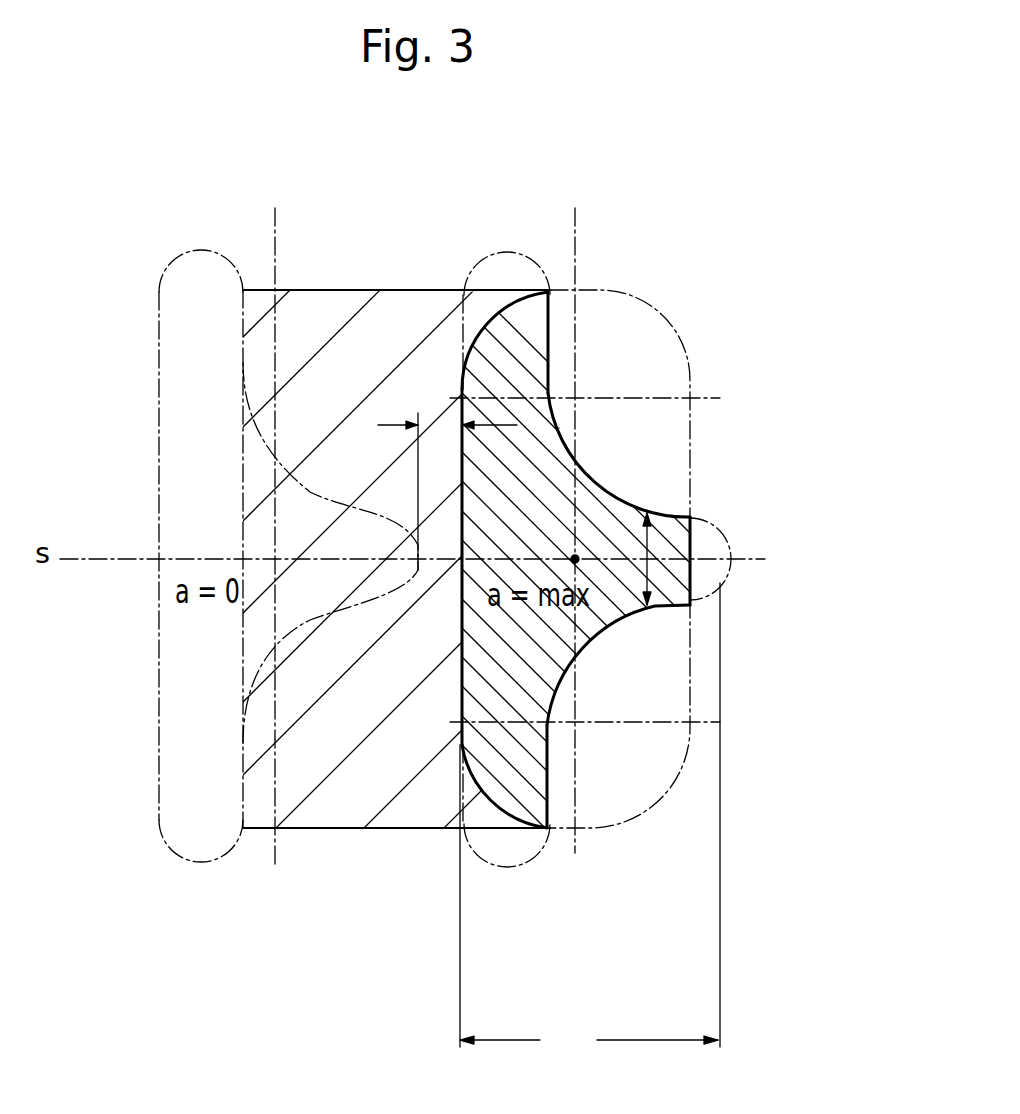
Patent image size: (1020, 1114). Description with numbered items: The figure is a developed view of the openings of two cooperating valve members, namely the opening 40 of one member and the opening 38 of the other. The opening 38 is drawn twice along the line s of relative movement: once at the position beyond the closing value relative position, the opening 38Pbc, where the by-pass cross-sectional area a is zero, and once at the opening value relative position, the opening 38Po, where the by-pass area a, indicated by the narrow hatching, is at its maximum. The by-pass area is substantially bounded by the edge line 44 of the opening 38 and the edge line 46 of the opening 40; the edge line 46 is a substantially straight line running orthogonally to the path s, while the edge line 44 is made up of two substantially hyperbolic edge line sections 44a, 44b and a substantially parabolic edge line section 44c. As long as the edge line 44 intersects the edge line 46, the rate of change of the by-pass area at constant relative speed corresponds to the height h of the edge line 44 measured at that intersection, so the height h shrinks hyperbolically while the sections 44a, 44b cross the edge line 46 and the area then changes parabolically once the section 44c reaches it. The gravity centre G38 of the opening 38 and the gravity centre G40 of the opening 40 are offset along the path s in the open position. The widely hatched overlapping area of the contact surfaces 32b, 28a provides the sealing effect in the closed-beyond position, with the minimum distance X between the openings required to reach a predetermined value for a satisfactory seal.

The opening 38 is at (532, 559).
The opening 40 is at (500, 312).
The edge line 44 is at (718, 543).
The hyperbolic edge line section 44a is at (617, 499).
The hyperbolic edge line section 44b is at (603, 637).
The parabolic edge line section 44c is at (722, 566).
The edge line 46 is at (462, 683).
The contact surface 32b is at (318, 808).
The contact surface 28a is at (491, 559).
The gravity centre of the opening 38 G38 is at (559, 428).
The gravity centre of the opening 40 G40 is at (575, 559).
The opening 38 in position Pbc 38Pbc is at (185, 250).
The opening 38 in opening value relative position Po 38Po is at (503, 253).
The height of the edge line 44 h is at (652, 515).
The minimum distance of the openings X is at (447, 490).